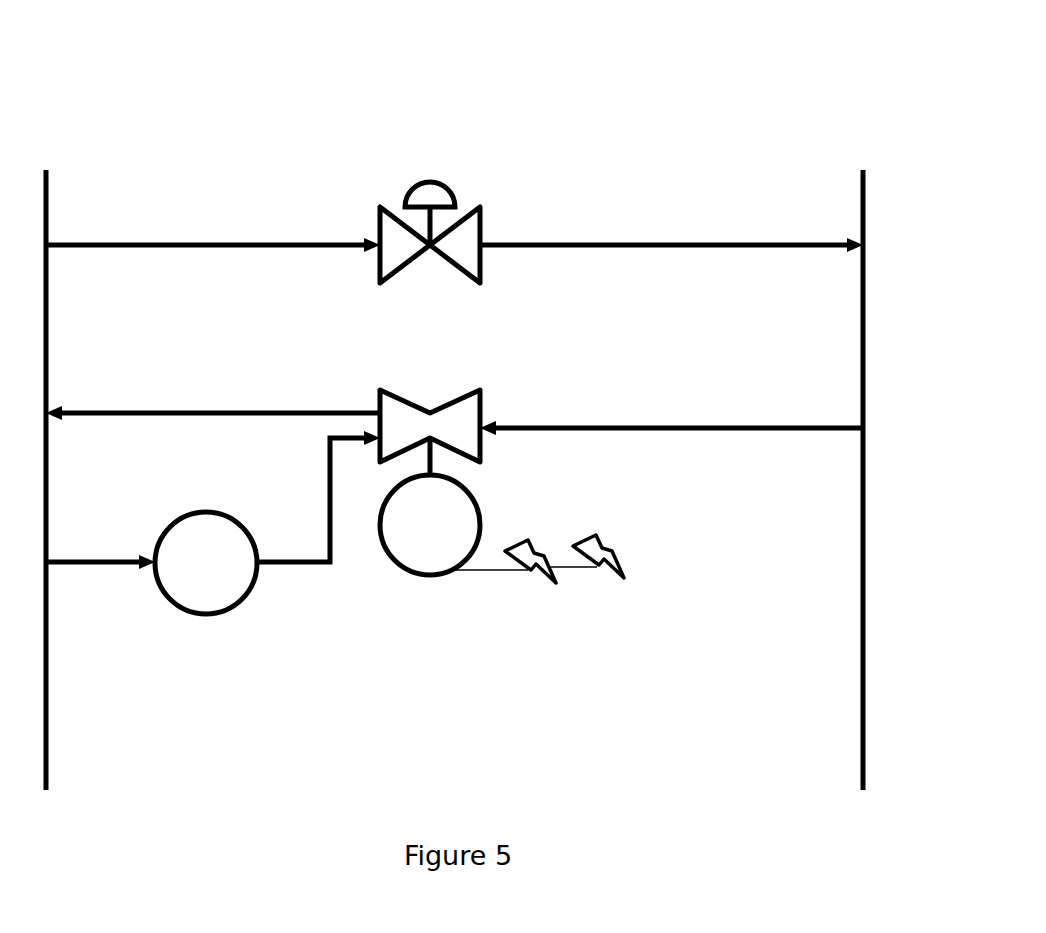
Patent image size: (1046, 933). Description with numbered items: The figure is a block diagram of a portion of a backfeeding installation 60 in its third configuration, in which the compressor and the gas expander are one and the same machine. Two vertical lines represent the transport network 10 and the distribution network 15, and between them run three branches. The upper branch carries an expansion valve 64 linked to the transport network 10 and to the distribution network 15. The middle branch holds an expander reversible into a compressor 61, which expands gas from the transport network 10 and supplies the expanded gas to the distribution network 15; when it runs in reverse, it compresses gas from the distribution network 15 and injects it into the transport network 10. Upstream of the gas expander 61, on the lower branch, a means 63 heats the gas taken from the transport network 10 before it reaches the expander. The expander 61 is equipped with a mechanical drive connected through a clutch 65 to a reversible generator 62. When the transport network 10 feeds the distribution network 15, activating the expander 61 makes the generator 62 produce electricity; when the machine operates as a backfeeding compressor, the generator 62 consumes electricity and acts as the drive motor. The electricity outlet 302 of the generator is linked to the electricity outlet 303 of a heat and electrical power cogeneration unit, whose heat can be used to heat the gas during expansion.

The transport network 10 is at (48, 500).
The distribution network 15 is at (866, 305).
The backfeeding installation 60 is at (590, 120).
The expander reversible into a compressor 61 is at (468, 412).
The reversible generator 62 is at (455, 555).
The means for heating the gas 63 is at (196, 590).
The expansion valve 64 is at (390, 245).
The clutch 65 is at (435, 463).
The electricity outlet of the generator 302 is at (556, 583).
The electricity outlet of the cogeneration unit 303 is at (622, 578).